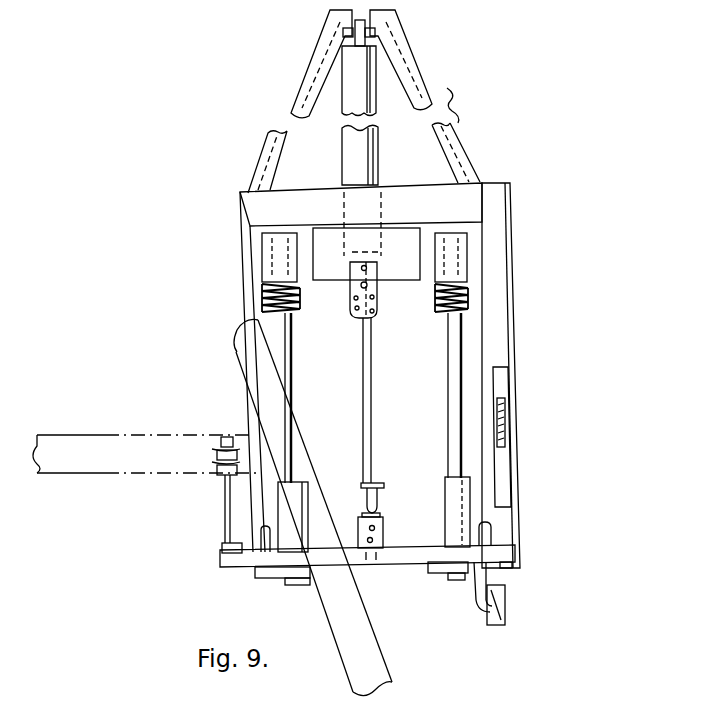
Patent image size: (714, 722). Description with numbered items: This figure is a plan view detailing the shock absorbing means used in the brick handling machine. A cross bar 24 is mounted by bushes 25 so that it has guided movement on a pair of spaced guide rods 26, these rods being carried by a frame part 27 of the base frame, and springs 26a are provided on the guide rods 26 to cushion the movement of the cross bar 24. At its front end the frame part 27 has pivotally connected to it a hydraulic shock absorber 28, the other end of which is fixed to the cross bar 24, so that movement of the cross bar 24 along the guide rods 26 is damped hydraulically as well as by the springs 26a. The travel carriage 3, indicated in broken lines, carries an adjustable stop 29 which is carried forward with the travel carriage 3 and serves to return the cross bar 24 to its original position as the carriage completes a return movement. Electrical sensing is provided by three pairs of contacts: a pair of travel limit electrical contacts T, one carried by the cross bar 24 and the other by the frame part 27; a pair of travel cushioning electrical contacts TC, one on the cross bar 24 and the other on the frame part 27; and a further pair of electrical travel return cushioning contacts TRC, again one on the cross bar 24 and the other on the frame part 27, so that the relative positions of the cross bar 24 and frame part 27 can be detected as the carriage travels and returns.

The travel carriage 3 is at (148, 440).
The cross bar 24 is at (235, 567).
The bushes 25 is at (305, 483).
The guide rods 26 is at (297, 371).
The springs 26a is at (297, 309).
The frame part 27 is at (420, 191).
The hydraulic shock absorber 28 is at (353, 93).
The adjustable stop 29 is at (235, 508).
The travel limit electrical contacts T is at (377, 318).
The travel return cushioning contacts TRC is at (505, 445).
The travel cushioning electrical contacts TC is at (505, 626).